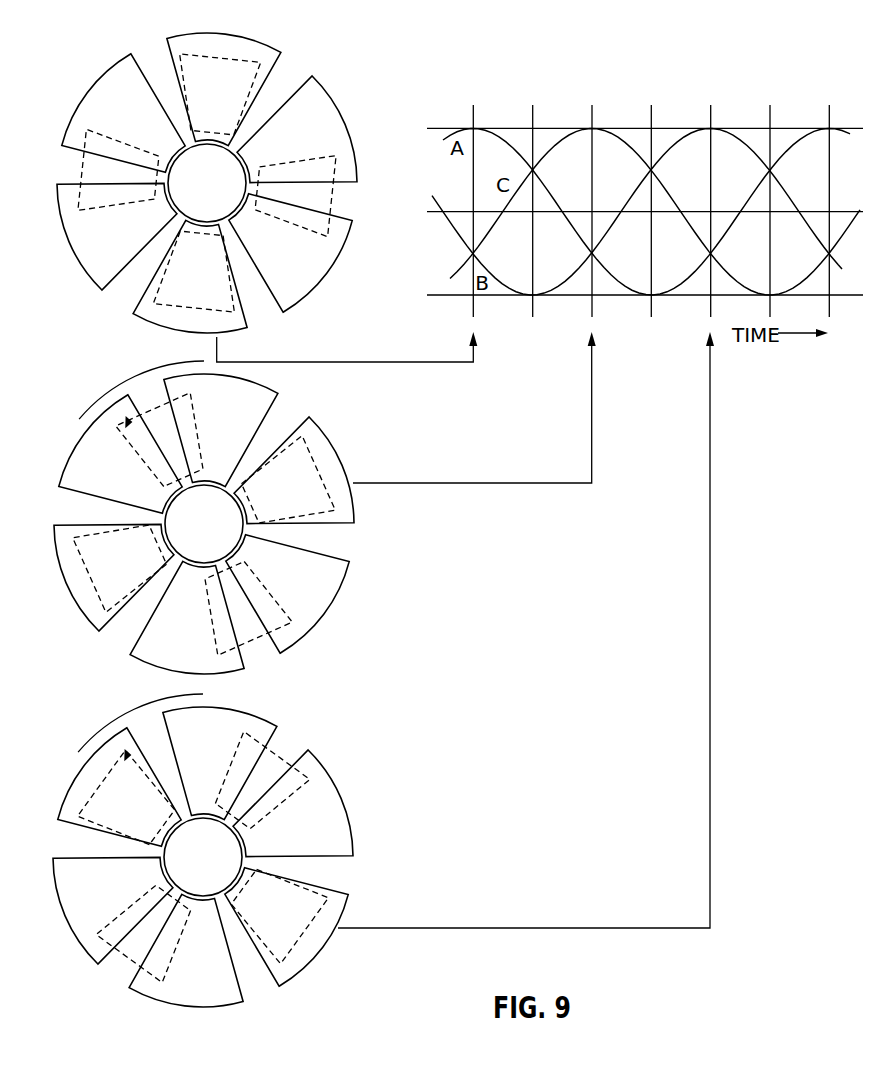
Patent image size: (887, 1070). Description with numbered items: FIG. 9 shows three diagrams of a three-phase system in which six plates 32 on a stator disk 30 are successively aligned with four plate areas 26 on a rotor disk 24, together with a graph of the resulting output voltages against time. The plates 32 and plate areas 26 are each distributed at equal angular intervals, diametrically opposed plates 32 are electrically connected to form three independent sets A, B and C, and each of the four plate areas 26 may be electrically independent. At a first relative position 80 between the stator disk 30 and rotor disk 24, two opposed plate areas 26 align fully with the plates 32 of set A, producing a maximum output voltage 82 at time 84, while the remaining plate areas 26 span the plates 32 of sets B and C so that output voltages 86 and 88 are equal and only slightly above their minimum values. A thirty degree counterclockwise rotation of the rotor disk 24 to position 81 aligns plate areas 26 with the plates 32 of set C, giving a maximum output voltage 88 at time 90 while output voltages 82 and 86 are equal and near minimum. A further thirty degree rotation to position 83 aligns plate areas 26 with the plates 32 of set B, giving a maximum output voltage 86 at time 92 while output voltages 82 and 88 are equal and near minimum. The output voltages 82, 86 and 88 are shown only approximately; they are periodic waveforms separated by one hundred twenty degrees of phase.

The rotor disk 24 is at (192, 170).
The stator disk 30 is at (140, 30).
The plate 32 is at (283, 52).
The plate area 26 is at (82, 161).
The first relative position 80 is at (340, 70).
The second position 81 is at (325, 403).
The third position 83 is at (325, 718).
The output voltage 82 is at (485, 128).
The output voltage 86 is at (508, 278).
The output voltage 88 is at (798, 133).
The time 84 is at (453, 362).
The time 90 is at (592, 402).
The time 92 is at (710, 425).